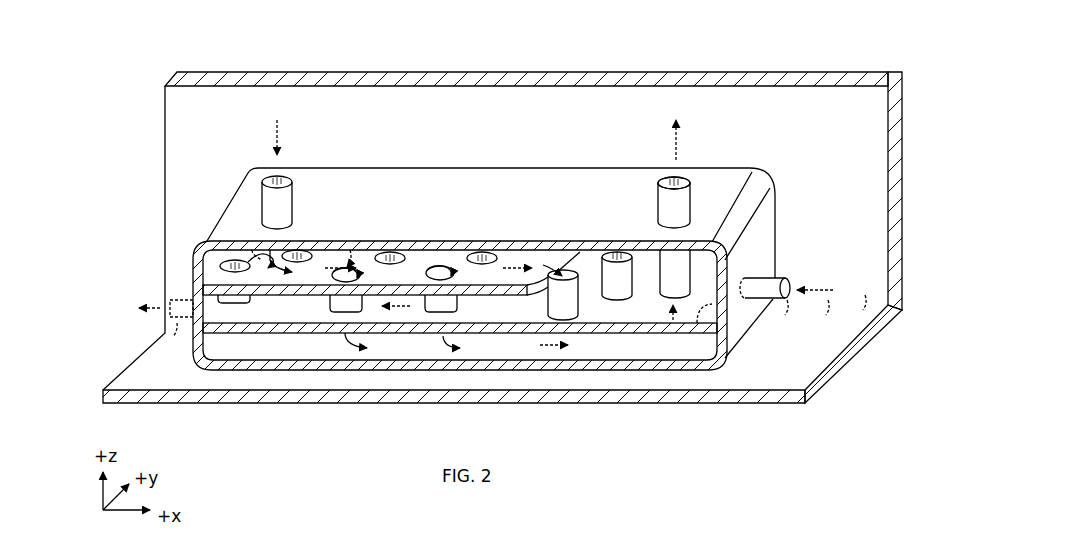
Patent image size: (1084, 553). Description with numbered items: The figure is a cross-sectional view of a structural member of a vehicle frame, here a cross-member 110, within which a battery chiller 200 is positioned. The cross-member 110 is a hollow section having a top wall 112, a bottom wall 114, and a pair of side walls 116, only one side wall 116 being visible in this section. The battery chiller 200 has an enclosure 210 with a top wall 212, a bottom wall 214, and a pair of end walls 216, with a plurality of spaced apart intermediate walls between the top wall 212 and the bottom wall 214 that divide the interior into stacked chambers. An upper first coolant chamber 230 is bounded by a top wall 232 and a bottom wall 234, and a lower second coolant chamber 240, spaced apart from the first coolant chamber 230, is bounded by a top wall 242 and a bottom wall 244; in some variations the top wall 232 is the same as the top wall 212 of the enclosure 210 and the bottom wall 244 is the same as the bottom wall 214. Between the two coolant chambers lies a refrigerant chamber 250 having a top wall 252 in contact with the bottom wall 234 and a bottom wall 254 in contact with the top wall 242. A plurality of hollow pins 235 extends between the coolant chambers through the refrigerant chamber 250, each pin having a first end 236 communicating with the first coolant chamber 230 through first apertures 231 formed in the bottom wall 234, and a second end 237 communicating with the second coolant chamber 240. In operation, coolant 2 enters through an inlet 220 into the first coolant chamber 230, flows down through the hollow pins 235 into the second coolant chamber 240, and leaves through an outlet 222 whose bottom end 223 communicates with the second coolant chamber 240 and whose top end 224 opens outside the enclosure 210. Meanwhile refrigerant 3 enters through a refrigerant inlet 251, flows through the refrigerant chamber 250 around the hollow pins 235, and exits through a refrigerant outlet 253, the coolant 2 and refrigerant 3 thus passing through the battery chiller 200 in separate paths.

The cross-member 110 is at (526, 226).
The top wall 112 is at (333, 101).
The bottom wall 114 is at (720, 405).
The side wall 116 is at (905, 135).
The battery chiller 200 is at (480, 143).
The enclosure 210 is at (503, 282).
The top wall 212 is at (413, 185).
The bottom wall 214 is at (570, 372).
The end walls 216 is at (192, 255).
The inlet 220 is at (262, 200).
The outlet 222 is at (655, 206).
The bottom end 223 is at (673, 293).
The top end 224 is at (692, 184).
The first coolant chamber 230 is at (212, 268).
The first apertures 231 is at (416, 248).
The top wall 232 is at (307, 250).
The bottom wall 234 is at (465, 250).
The hollow pins 235 is at (365, 272).
The first end 236 is at (575, 248).
The second end 237 is at (580, 300).
The second coolant chamber 240 is at (212, 345).
The top wall 242 is at (300, 336).
The bottom wall 244 is at (595, 358).
The refrigerant chamber 250 is at (212, 300).
The refrigerant inlet 251 is at (775, 278).
The top wall 252 is at (310, 300).
The refrigerant outlet 253 is at (172, 297).
The bottom wall 254 is at (714, 300).
The coolant 2 is at (273, 140).
The refrigerant 3 is at (156, 309).